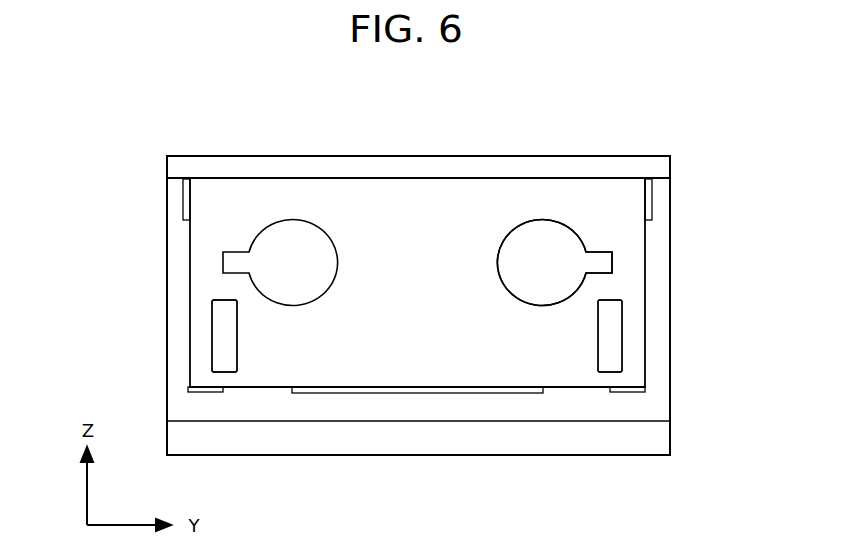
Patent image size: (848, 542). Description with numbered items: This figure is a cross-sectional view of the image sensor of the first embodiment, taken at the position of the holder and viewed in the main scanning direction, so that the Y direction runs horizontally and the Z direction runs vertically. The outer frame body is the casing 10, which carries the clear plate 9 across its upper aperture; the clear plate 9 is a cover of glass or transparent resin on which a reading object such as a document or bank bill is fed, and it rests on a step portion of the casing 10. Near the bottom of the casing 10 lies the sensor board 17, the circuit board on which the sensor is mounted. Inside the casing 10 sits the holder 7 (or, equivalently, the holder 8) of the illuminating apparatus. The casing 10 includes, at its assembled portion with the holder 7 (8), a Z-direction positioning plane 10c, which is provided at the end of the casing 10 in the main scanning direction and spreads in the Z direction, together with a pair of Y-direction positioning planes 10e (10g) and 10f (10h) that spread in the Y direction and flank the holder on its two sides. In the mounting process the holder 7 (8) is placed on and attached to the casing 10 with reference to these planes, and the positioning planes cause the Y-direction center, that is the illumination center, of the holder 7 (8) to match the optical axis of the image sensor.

The holder 7 is at (453, 203).
The holder 8 is at (554, 263).
The clear plate 9 is at (250, 165).
The casing 10 is at (660, 197).
The Z-direction positioning plane 10c is at (257, 385).
The Y-direction positioning plane 10e is at (645, 322).
The Y-direction positioning plane 10f is at (190, 322).
The Y-direction positioning plane 10g is at (610, 336).
The Y-direction positioning plane 10h is at (224, 336).
The sensor board 17 is at (653, 443).